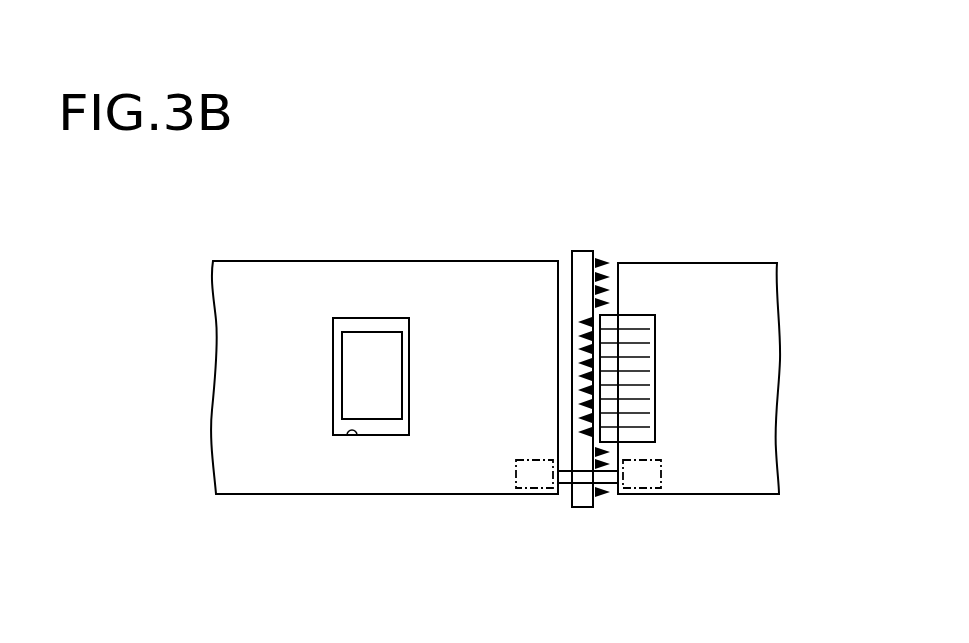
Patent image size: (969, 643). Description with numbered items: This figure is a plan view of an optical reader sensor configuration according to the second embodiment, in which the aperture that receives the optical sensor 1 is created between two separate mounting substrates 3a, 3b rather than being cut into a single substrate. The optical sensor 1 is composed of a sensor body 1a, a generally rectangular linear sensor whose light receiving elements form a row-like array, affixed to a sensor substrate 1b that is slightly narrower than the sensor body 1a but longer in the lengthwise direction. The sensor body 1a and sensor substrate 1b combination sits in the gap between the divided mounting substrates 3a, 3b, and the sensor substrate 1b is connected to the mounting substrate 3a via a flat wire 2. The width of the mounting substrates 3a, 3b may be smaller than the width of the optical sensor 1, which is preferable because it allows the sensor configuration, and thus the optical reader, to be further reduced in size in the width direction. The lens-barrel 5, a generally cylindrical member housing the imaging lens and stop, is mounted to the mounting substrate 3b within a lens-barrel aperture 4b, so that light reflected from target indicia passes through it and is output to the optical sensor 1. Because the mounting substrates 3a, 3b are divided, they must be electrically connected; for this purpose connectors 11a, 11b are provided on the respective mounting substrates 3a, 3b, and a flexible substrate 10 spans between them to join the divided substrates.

The optical sensor 1 is at (625, 151).
The sensor body 1a is at (580, 273).
The sensor substrate 1b is at (594, 263).
The flat wire 2 is at (645, 337).
The mounting substrate 3a is at (706, 278).
The mounting substrate 3b is at (243, 285).
The lens-barrel aperture 4b is at (347, 435).
The lens-barrel 5 is at (375, 348).
The flexible substrate 10 is at (567, 480).
The connector 11a is at (651, 478).
The connector 11b is at (518, 476).